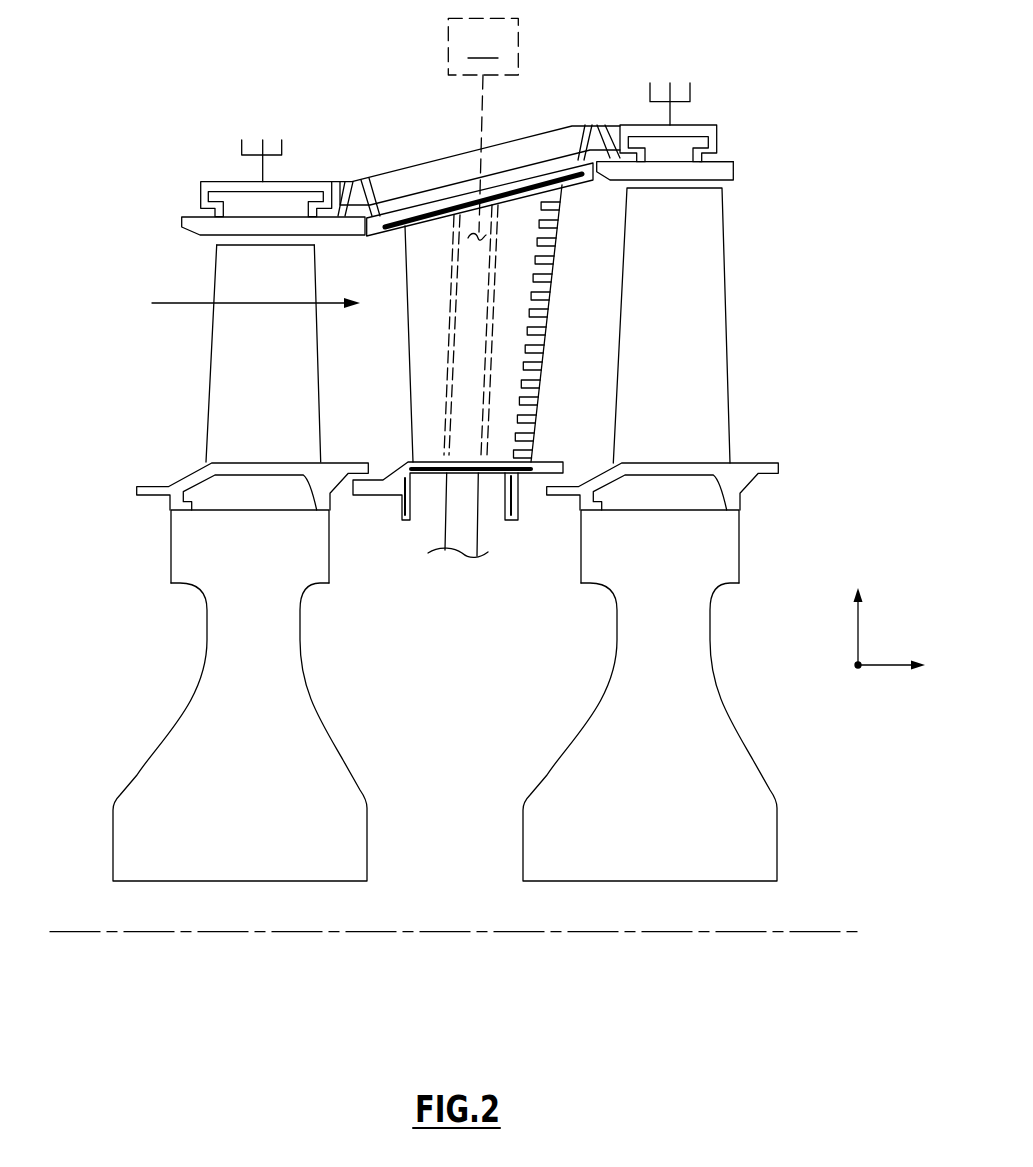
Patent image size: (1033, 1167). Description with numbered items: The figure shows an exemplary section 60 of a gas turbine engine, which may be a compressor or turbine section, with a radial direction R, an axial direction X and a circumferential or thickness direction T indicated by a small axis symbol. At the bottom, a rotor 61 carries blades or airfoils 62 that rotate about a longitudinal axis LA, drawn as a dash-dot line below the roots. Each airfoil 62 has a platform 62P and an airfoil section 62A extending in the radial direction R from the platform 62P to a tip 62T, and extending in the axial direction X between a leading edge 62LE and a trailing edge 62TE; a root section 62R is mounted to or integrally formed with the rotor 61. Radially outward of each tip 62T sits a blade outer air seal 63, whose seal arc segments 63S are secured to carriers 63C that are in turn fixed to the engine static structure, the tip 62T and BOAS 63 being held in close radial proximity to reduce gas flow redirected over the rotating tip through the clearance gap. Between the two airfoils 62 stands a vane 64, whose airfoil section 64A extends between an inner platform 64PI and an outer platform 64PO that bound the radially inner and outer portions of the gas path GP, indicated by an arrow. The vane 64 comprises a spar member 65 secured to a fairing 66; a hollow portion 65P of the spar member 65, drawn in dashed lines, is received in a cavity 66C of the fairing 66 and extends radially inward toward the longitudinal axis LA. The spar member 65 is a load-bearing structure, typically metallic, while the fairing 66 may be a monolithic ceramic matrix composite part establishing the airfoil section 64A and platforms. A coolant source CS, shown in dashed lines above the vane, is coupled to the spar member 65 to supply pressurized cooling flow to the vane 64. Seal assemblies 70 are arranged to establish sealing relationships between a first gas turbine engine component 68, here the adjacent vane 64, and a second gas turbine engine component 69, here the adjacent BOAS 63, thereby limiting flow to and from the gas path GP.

The section 60 is at (487, 474).
The rotor 61 is at (121, 763).
The airfoil 62 is at (449, 534).
The airfoil section 62A is at (419, 325).
The leading edge 62LE is at (208, 402).
The trailing edge 62TE is at (322, 396).
The tip 62T is at (240, 246).
The platform 62P is at (157, 482).
The root section 62R is at (191, 561).
The blade outer air seal 63 is at (468, 153).
The carrier 63C is at (217, 181).
The seal arc segment 63S is at (186, 216).
The vane 64 is at (518, 360).
The airfoil section 64A is at (509, 371).
The inner platform 64PI is at (550, 463).
The outer platform 64PO is at (534, 225).
The spar member 65 is at (467, 131).
The portion 65P is at (455, 333).
The fairing 66 is at (420, 270).
The cavity 66C is at (478, 335).
The first gas turbine engine component 68 is at (587, 182).
The second gas turbine engine component 69 is at (732, 161).
The seal assembly 70 is at (353, 166).
The coolant source CS is at (483, 125).
The gas path GP is at (165, 306).
The longitudinal axis LA is at (820, 931).
The radial direction R is at (869, 620).
The axial direction X is at (902, 669).
The circumferential direction T is at (856, 668).